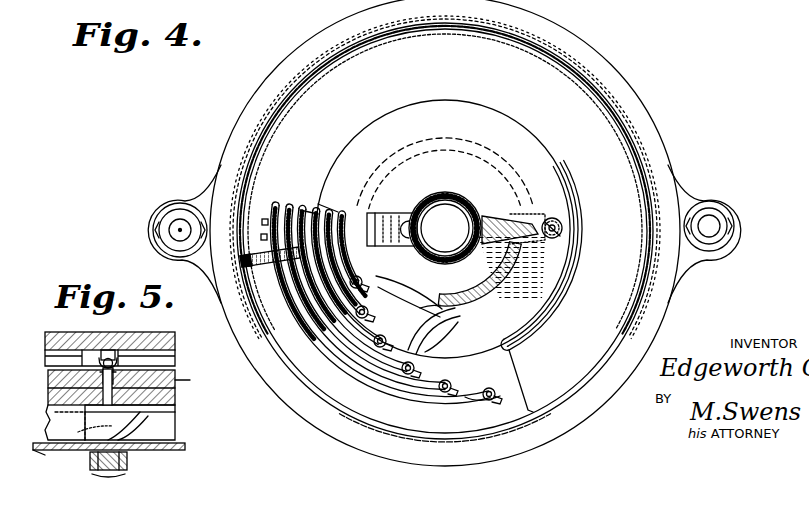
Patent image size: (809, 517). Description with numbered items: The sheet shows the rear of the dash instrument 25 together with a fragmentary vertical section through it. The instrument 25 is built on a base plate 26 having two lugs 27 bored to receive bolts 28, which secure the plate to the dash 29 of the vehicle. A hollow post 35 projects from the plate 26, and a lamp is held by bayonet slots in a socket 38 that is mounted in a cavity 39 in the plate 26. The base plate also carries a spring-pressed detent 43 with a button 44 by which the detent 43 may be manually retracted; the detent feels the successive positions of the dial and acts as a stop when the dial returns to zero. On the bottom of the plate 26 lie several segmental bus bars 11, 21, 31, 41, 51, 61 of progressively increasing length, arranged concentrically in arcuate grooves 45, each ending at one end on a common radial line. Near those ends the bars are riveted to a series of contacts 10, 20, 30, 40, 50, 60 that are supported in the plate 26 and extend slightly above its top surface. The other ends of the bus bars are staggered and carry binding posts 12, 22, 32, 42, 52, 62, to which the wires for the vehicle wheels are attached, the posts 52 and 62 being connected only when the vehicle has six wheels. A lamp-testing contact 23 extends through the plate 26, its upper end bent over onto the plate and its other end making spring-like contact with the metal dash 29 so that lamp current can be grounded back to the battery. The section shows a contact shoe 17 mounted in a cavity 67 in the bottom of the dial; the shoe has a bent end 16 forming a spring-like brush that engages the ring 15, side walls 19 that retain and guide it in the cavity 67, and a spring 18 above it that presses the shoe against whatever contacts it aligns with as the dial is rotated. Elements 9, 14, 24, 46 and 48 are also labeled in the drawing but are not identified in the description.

In FIG. 4, the pointer 9 is at (500, 215).
In FIG. 4, the contact 10 is at (345, 152).
In FIG. 4, the segmental bus bar 11 is at (276, 279).
In FIG. 4, the binding post 12 is at (290, 294).
In FIG. 4, the coil 14 is at (388, 220).
In FIG. 4, the ring 15 is at (412, 293).
In FIG. 4, the bent end 16 is at (322, 198).
In FIG. 5, the contact shoe 17 is at (60, 405).
In FIG. 5, the spring 18 is at (112, 350).
In FIG. 5, the side walls 19 is at (102, 357).
In FIG. 4, the contact 20 is at (314, 200).
In FIG. 4, the segmental bus bar 21 is at (305, 310).
In FIG. 4, the binding post 22 is at (323, 321).
In FIG. 5, the lamp-testing contact 23 is at (175, 390).
In FIG. 4, the bar 24 is at (248, 256).
In FIG. 5, the bar 24 is at (175, 448).
In FIG. 4, the instrument 25 is at (618, 73).
In FIG. 4, the base plate 26 is at (622, 123).
In FIG. 5, the base plate 26 is at (60, 393).
In FIG. 4, the lugs 27 is at (200, 198).
In FIG. 4, the bolts 28 is at (709, 226).
In FIG. 5, the bolts 28 is at (127, 462).
In FIG. 5, the dash 29 is at (64, 449).
In FIG. 4, the contact 30 is at (302, 193).
In FIG. 4, the segmental bus bar 31 is at (339, 332).
In FIG. 4, the binding post 32 is at (360, 340).
In FIG. 4, the hollow post 35 is at (420, 328).
In FIG. 4, the socket 38 is at (436, 194).
In FIG. 4, the cavity 39 is at (460, 193).
In FIG. 4, the contact 40 is at (322, 205).
In FIG. 5, the contact 40 is at (175, 403).
In FIG. 4, the segmental bus bar 41 is at (380, 346).
In FIG. 5, the segmental bus bar 41 is at (175, 425).
In FIG. 4, the binding post 42 is at (400, 347).
In FIG. 4, the spring-pressed detent 43 is at (563, 227).
In FIG. 4, the button 44 is at (554, 216).
In FIG. 4, the arcuate grooves 45 is at (492, 393).
In FIG. 5, the arcuate grooves 45 is at (95, 429).
In FIG. 4, the arm 46 is at (428, 353).
In FIG. 4, the mounting ring 48 is at (170, 215).
In FIG. 4, the contact 50 is at (305, 206).
In FIG. 4, the segmental bus bar 51 is at (422, 362).
In FIG. 4, the binding post 52 is at (443, 369).
In FIG. 4, the contact 60 is at (262, 228).
In FIG. 4, the segmental bus bar 61 is at (472, 376).
In FIG. 4, the binding post 62 is at (503, 389).
In FIG. 5, the cavity 67 is at (105, 360).